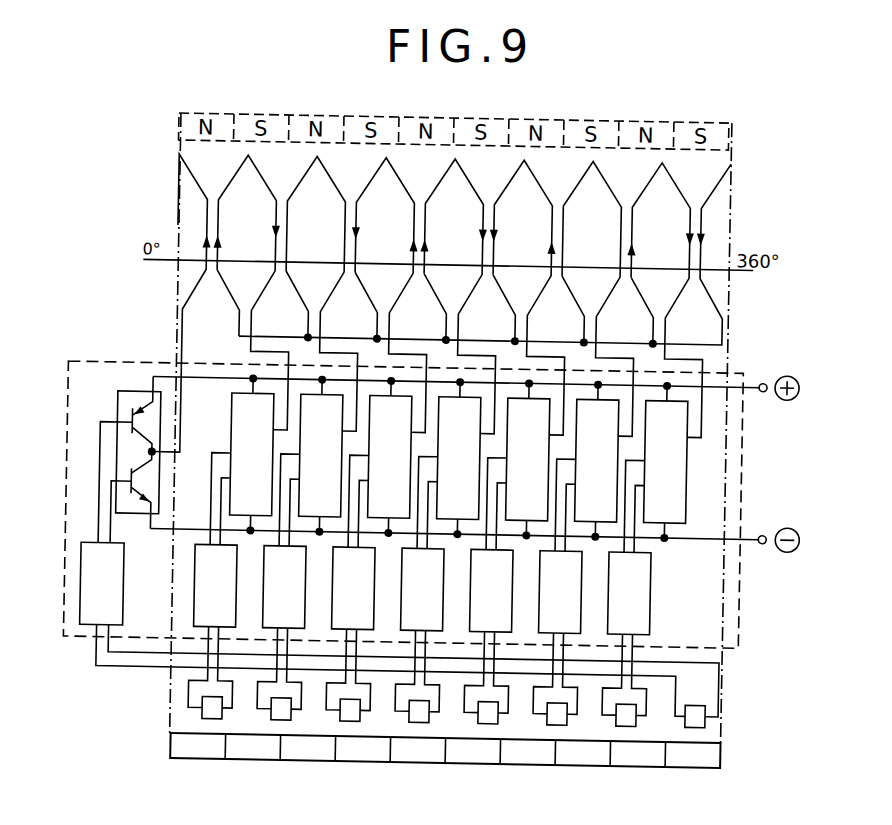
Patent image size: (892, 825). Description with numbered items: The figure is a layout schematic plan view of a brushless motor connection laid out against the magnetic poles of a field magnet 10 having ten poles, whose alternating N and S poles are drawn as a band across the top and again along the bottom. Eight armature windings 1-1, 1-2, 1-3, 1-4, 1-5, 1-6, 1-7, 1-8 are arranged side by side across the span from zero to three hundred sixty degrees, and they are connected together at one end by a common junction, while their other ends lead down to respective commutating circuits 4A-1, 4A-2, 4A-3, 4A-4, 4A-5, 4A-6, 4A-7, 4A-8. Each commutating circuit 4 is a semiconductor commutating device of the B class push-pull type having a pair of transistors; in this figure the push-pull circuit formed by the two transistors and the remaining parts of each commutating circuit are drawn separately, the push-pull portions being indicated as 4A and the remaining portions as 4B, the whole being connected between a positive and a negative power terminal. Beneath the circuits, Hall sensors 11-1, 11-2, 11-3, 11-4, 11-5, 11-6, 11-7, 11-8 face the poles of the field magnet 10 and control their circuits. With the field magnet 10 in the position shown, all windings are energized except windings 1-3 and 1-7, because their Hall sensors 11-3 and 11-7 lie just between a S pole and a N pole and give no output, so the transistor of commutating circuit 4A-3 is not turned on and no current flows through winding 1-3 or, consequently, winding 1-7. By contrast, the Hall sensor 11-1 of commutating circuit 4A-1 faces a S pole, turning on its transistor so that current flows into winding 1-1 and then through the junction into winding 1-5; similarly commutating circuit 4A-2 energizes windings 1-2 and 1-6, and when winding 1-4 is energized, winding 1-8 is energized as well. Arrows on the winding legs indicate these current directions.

The armature winding 1-1 is at (188, 168).
The armature winding 1-2 is at (257, 168).
The armature winding 1-3 is at (326, 168).
The armature winding 1-4 is at (395, 168).
The armature winding 1-5 is at (464, 168).
The armature winding 1-6 is at (533, 168).
The armature winding 1-7 is at (602, 168).
The armature winding 1-8 is at (671, 168).
The commutating circuit 4 is at (748, 512).
The push-pull circuit portion of commutating circuit 4A is at (693, 476).
The commutating circuit 4A-1 is at (123, 396).
The commutating circuit 4A-2 is at (242, 460).
The commutating circuit 4A-3 is at (311, 461).
The commutating circuit 4A-4 is at (380, 462).
The commutating circuit 4A-5 is at (449, 463).
The commutating circuit 4A-6 is at (518, 465).
The commutating circuit 4A-7 is at (587, 466).
The commutating circuit 4A-8 is at (656, 467).
The remaining parts of commutating circuit 4B is at (659, 606).
The field magnet 10 is at (733, 748).
The Hall sensor 11-1 is at (704, 712).
The Hall sensor 11-2 is at (221, 712).
The Hall sensor 11-3 is at (290, 712).
The Hall sensor 11-4 is at (359, 712).
The Hall sensor 11-5 is at (428, 712).
The Hall sensor 11-6 is at (497, 712).
The Hall sensor 11-7 is at (566, 712).
The Hall sensor 11-8 is at (635, 712).